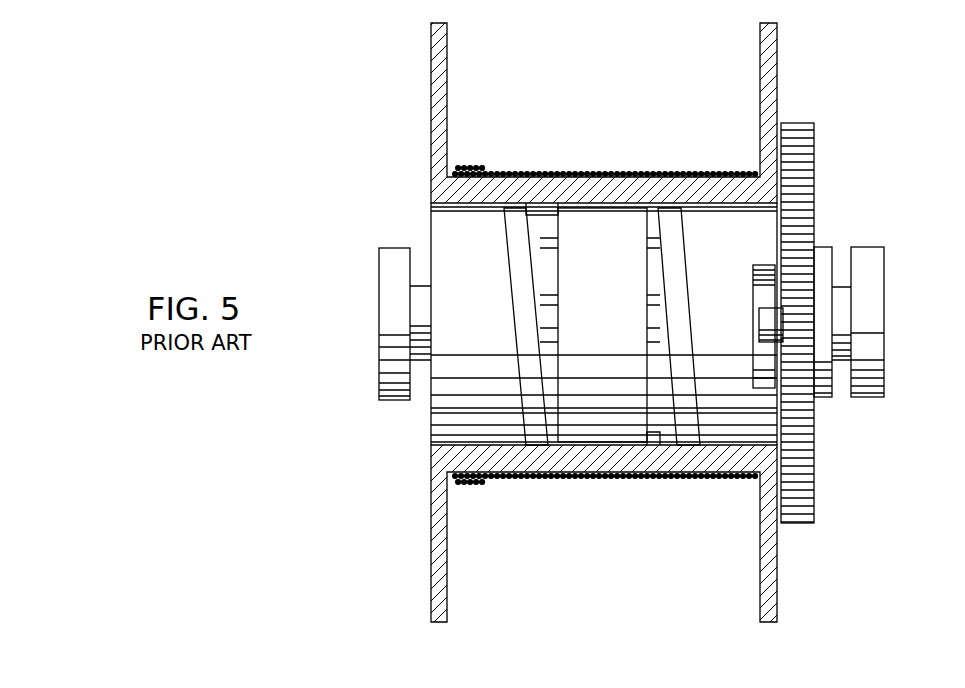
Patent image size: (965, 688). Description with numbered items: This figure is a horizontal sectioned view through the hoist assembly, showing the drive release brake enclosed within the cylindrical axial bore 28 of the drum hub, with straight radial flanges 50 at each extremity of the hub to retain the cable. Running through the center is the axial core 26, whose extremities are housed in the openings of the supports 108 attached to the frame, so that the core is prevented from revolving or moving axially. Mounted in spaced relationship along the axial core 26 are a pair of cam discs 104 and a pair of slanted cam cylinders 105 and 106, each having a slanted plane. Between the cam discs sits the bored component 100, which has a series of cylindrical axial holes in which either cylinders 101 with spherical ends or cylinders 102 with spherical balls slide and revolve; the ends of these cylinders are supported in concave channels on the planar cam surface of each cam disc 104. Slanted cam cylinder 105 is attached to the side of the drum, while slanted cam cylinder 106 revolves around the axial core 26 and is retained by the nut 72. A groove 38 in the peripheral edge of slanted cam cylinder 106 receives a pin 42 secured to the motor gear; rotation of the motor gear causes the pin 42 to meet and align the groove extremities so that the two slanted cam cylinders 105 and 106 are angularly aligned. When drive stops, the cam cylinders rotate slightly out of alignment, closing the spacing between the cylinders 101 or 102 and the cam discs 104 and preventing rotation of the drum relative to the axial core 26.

The axial core 26 is at (832, 380).
The cylindrical axial bore 28 is at (600, 210).
The groove 38 is at (765, 265).
The pin 42 is at (762, 312).
The radial flange 50 is at (447, 590).
The nut 72 is at (825, 248).
The bored component 100 is at (612, 430).
The cylinder with spherical ends 101 is at (530, 215).
The cylinder with spherical balls 102 is at (662, 430).
The cam disc 104 is at (530, 445).
The slanted cam cylinder 105 is at (431, 412).
The slanted cam cylinder 106 is at (770, 427).
The support 108 is at (884, 335).